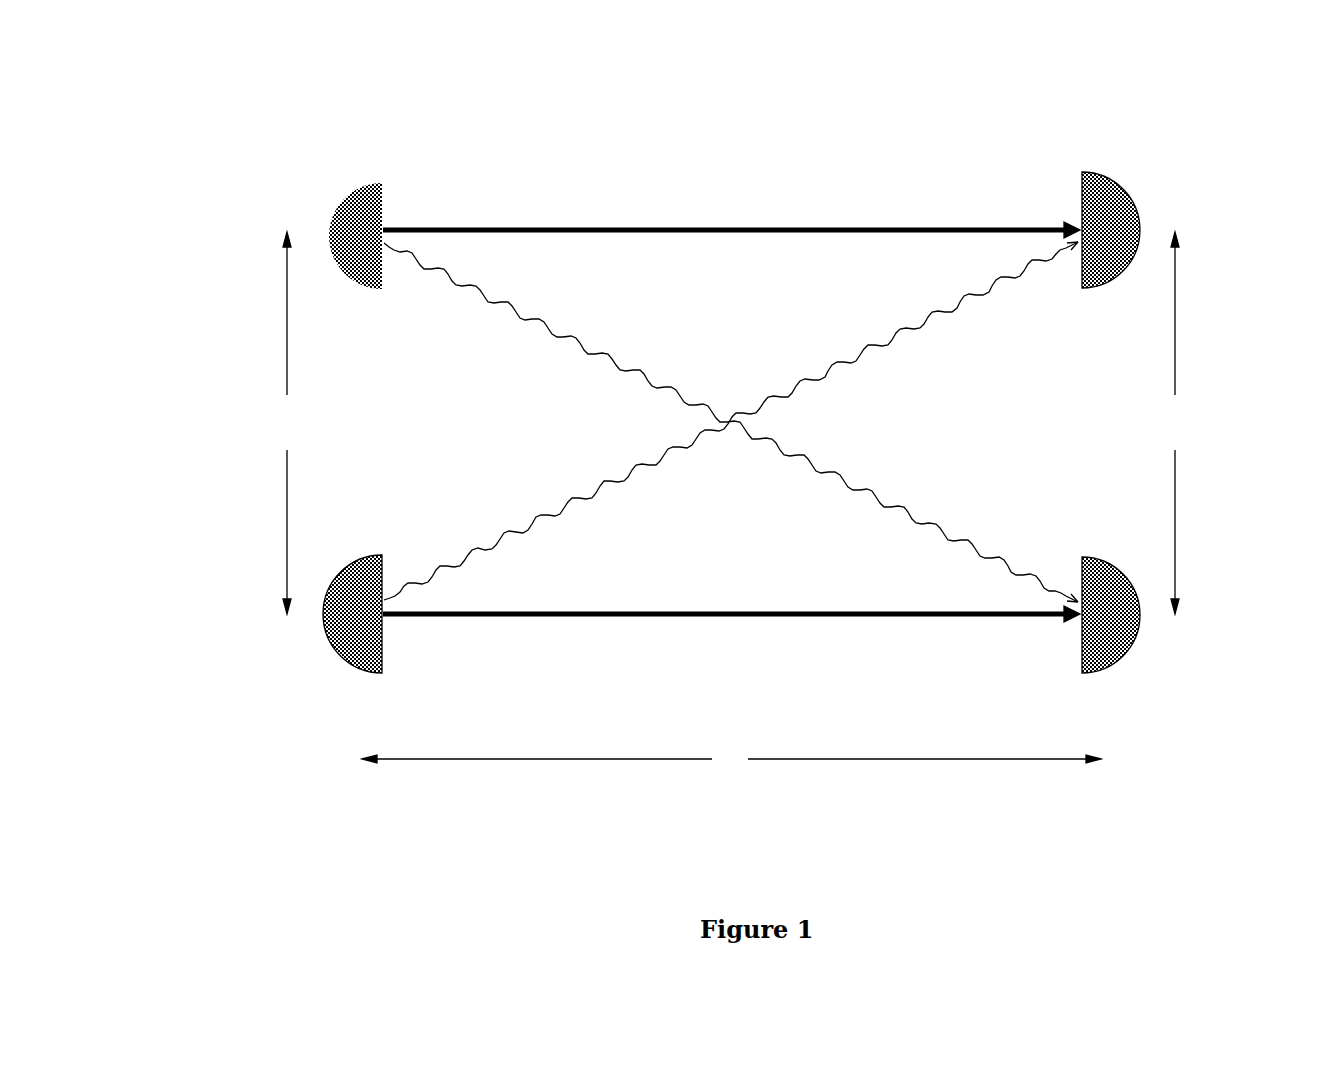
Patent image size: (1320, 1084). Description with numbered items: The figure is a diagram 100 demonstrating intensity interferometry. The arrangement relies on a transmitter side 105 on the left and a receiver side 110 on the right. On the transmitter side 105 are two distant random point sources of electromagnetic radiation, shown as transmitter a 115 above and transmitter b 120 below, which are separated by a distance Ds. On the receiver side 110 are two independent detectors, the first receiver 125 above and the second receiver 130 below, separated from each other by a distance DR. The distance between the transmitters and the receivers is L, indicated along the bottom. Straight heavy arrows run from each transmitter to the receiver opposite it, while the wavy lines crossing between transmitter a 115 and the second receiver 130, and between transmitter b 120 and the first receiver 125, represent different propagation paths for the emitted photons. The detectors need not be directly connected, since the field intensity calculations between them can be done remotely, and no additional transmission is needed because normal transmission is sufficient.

The diagram 100 is at (289, 113).
The transmitter side 105 is at (319, 428).
The receiver side 110 is at (1158, 422).
The transmitter a 115 is at (388, 236).
The transmitter b 120 is at (385, 614).
The receiver 1 125 is at (1088, 230).
The receiver 2 130 is at (1088, 615).